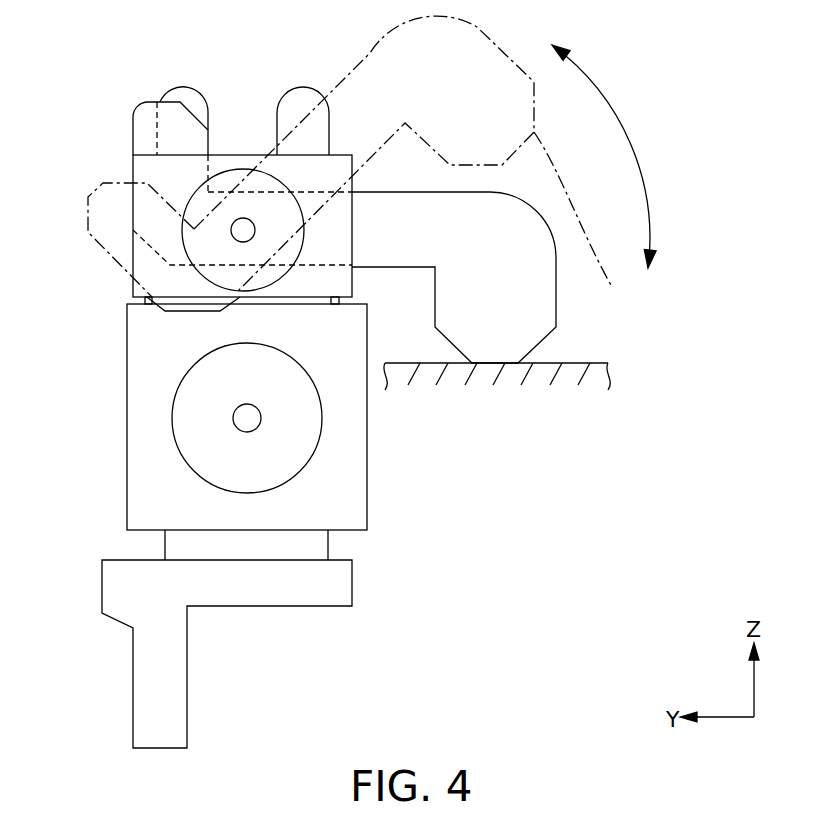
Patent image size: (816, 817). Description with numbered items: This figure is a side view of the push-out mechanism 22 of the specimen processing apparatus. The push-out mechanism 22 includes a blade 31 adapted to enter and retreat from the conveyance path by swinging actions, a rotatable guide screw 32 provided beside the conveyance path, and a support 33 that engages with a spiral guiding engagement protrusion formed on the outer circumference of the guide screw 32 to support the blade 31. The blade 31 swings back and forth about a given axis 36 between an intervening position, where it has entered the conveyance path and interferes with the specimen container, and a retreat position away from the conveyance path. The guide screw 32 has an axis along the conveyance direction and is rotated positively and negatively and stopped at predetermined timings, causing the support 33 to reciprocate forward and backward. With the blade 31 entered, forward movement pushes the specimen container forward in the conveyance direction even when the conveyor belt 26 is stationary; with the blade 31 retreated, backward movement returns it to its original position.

The push-out mechanism 22 is at (127, 360).
The conveyor belt 26 is at (603, 381).
The blade 31 is at (556, 293).
The guide screw 32 is at (247, 418).
The support 33 is at (238, 155).
The axis 36 is at (232, 222).